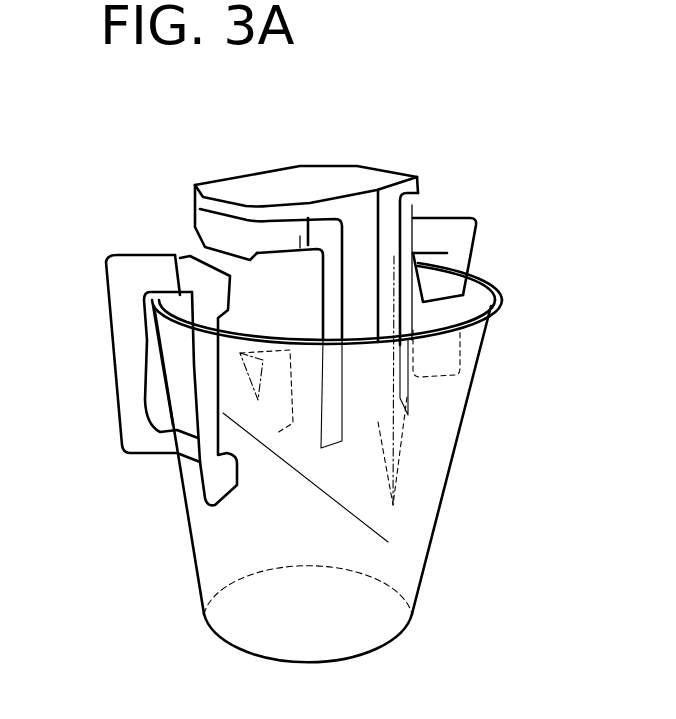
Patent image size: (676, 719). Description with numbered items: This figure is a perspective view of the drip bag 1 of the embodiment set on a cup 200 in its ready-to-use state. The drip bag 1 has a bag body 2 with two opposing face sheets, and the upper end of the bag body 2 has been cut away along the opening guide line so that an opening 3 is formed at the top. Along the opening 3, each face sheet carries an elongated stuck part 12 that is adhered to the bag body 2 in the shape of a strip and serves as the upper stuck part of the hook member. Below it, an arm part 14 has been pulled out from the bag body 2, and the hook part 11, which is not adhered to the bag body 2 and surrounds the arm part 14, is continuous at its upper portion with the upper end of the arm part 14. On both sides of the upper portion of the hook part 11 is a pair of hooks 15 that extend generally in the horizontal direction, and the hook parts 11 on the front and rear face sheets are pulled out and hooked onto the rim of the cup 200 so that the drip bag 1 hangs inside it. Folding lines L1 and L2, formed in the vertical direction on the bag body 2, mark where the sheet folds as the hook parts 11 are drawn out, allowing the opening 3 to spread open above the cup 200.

The drip bag 1 is at (316, 226).
The bag body 2 is at (390, 212).
The opening 3 is at (333, 180).
The hook part 11 is at (133, 362).
The elongated stuck part 12 is at (272, 233).
The arm part 14 is at (243, 325).
The hook 15 is at (152, 267).
The fold line L1 is at (255, 232).
The fold line L2 is at (305, 245).
The cup 200 is at (417, 558).